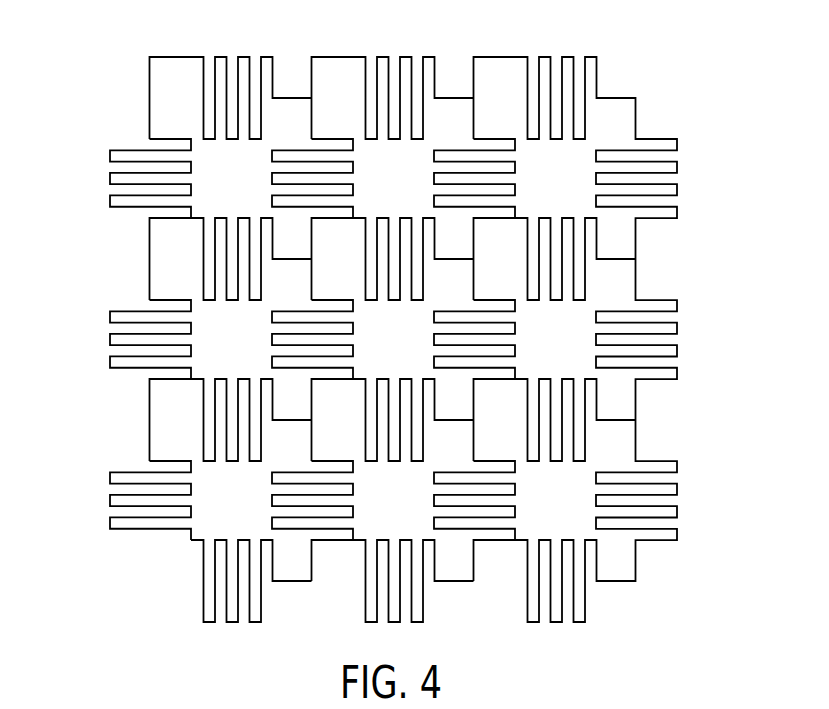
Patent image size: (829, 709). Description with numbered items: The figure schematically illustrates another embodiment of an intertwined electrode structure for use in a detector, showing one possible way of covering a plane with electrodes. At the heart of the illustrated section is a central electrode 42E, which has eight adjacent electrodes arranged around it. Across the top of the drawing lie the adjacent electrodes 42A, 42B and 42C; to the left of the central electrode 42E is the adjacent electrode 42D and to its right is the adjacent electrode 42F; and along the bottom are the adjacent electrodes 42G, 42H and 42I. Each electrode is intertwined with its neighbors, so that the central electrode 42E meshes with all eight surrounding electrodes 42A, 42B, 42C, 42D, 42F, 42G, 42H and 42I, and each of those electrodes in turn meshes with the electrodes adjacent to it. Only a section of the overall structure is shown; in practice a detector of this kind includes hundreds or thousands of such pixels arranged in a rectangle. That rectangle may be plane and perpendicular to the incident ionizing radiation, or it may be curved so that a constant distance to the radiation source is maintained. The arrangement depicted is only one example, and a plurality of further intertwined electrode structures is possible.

The adjacent electrode 42A is at (175, 57).
The adjacent electrode 42B is at (330, 57).
The adjacent electrode 42C is at (493, 57).
The adjacent electrode 42D is at (150, 285).
The central electrode 42E is at (511, 208).
The adjacent electrode 42F is at (635, 285).
The adjacent electrode 42G is at (292, 581).
The adjacent electrode 42H is at (450, 581).
The adjacent electrode 42I is at (612, 582).